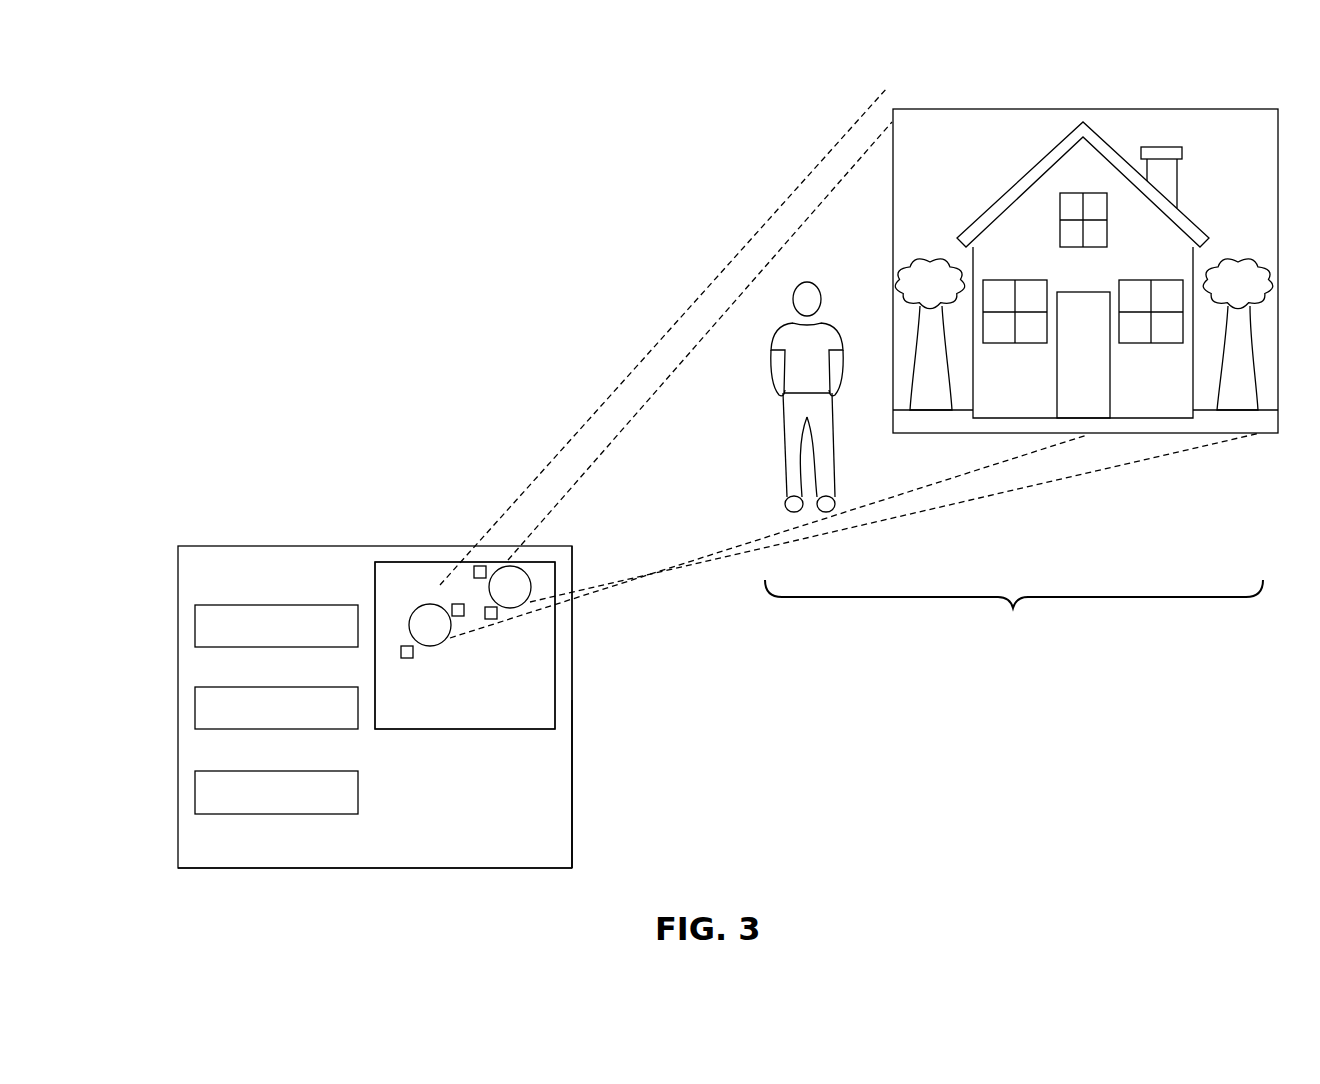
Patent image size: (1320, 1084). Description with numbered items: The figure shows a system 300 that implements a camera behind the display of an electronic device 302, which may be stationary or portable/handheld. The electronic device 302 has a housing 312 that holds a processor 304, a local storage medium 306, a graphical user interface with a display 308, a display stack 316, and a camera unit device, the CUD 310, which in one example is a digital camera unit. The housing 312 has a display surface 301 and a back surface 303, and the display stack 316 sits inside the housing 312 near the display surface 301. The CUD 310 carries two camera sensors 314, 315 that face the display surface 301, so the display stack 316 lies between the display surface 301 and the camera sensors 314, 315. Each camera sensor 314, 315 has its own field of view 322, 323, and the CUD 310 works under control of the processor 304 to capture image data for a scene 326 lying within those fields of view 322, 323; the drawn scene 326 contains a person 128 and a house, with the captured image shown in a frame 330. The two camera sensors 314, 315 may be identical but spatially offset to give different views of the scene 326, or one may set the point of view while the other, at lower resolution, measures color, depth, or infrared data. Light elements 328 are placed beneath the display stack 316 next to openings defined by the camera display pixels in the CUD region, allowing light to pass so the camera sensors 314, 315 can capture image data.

The system 300 is at (455, 178).
The display surface 301 is at (277, 840).
The electronic device 302 is at (578, 692).
The back surface 303 is at (389, 874).
The processor 304 is at (195, 627).
The local storage medium 306 is at (195, 710).
The graphical user interface 308 is at (195, 795).
The CUD 310 is at (467, 730).
The housing 312 is at (573, 803).
The camera sensor 314 is at (531, 583).
The camera sensor 315 is at (430, 604).
The display stack 316 is at (375, 580).
The field of view 322 is at (673, 372).
The field of view 323 is at (605, 402).
The scene 326 is at (856, 538).
The light elements 328 is at (458, 603).
The captured scene image 330 is at (1199, 96).
The subject person 128 is at (803, 272).